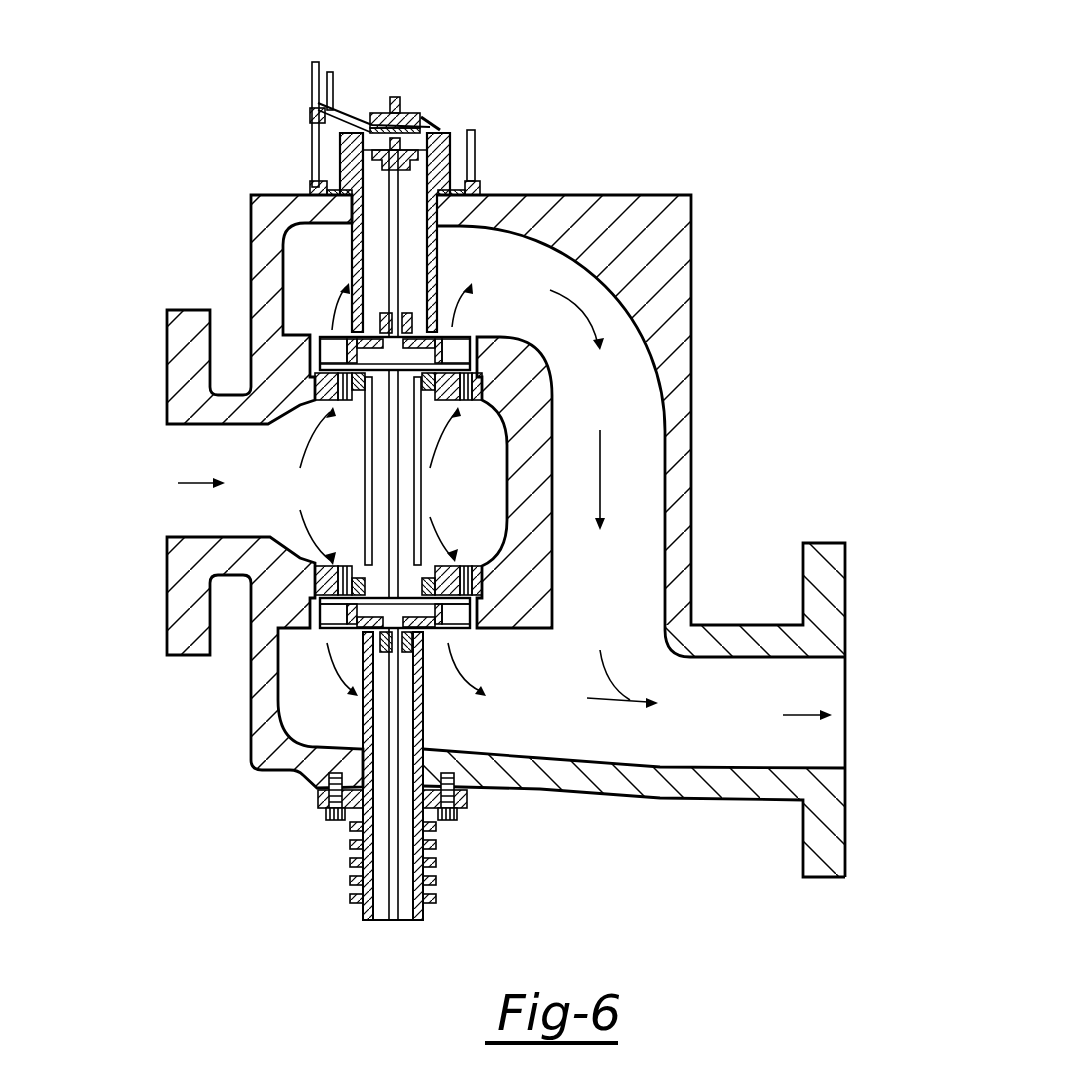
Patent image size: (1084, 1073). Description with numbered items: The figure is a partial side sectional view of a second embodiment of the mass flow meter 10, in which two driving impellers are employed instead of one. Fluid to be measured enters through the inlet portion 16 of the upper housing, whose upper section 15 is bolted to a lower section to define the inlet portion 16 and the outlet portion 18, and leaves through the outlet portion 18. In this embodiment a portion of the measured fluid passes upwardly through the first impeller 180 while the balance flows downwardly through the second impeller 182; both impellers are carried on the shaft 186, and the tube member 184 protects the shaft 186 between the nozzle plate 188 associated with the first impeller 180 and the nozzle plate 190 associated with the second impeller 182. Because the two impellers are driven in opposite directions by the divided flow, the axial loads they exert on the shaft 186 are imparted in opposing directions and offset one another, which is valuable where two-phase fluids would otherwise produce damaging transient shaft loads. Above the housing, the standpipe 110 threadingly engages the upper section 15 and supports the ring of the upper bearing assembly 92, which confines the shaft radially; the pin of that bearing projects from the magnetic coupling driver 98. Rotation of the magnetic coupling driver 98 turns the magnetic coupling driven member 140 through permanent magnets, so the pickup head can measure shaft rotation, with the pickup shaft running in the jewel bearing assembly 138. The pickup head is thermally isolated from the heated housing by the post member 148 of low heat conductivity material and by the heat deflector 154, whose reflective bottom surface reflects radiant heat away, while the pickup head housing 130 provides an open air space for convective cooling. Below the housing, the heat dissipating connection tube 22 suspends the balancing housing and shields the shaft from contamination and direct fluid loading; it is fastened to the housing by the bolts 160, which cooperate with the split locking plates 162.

The mass flow meter 10 is at (506, 536).
The upper section 15 is at (690, 402).
The inlet portion 16 is at (210, 507).
The outlet portion 18 is at (827, 678).
The connection tube 22 is at (437, 878).
The upper bearing assembly 92 is at (405, 145).
The magnetic coupling driver 98 is at (412, 158).
The standpipe 110 is at (428, 224).
The pickup head housing 130 is at (313, 78).
The jewel bearing assembly 138 is at (406, 110).
The magnetic coupling driven member 140 is at (415, 140).
The post member 148 is at (312, 184).
The heat deflector 154 is at (336, 130).
The bolt 160 is at (325, 811).
The split locking plate 162 is at (463, 806).
The first impeller 180 is at (452, 326).
The second impeller 182 is at (447, 613).
The tube member 184 is at (367, 463).
The shaft 186 is at (390, 507).
The nozzle plate 188 is at (477, 392).
The nozzle plate 190 is at (477, 574).